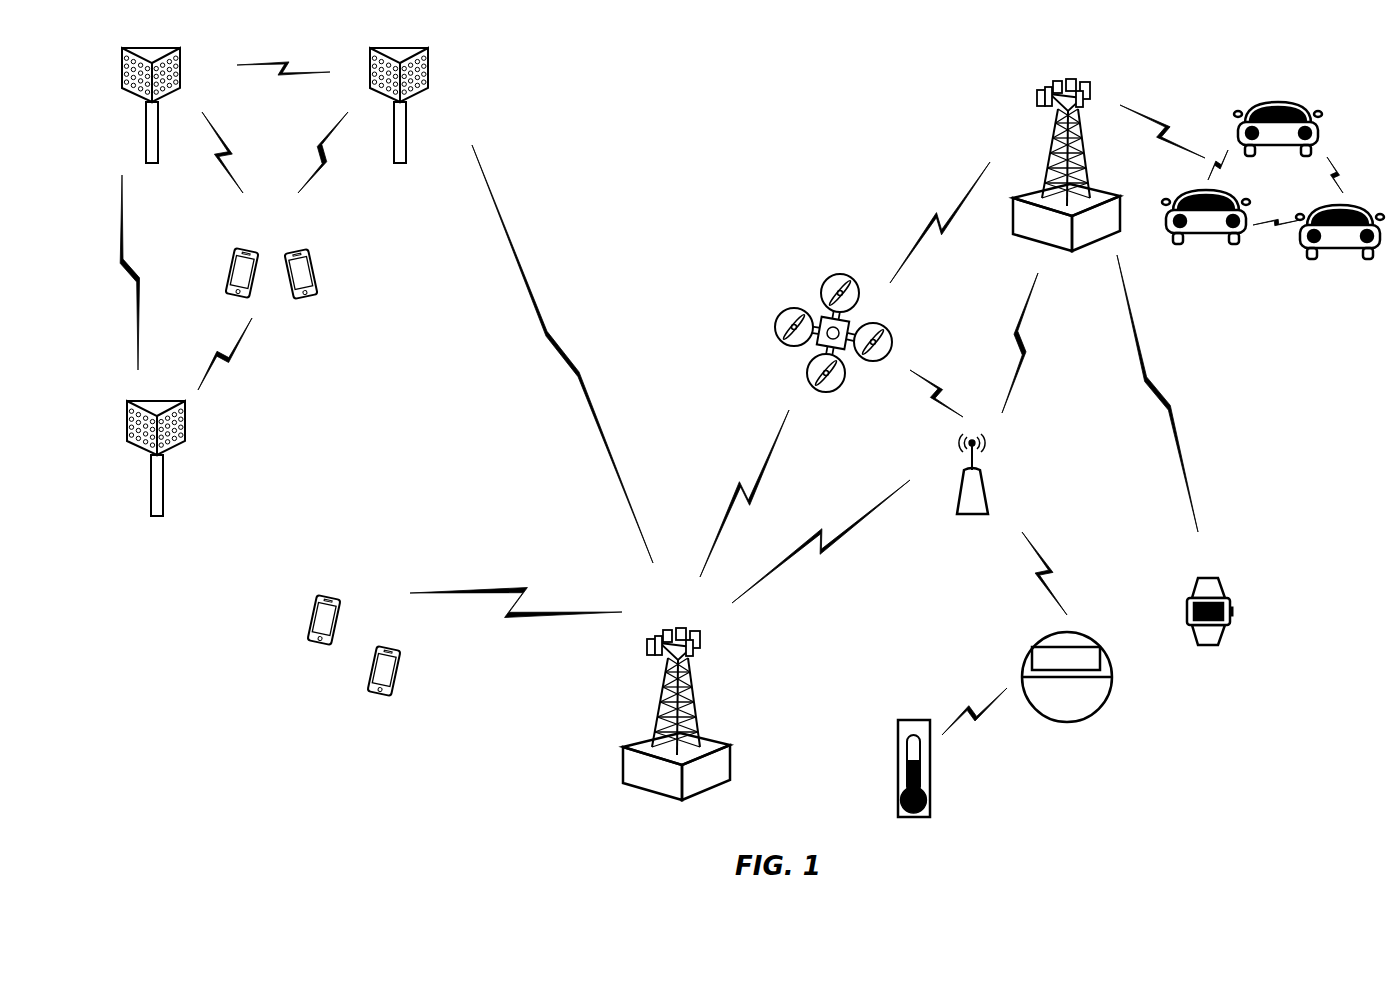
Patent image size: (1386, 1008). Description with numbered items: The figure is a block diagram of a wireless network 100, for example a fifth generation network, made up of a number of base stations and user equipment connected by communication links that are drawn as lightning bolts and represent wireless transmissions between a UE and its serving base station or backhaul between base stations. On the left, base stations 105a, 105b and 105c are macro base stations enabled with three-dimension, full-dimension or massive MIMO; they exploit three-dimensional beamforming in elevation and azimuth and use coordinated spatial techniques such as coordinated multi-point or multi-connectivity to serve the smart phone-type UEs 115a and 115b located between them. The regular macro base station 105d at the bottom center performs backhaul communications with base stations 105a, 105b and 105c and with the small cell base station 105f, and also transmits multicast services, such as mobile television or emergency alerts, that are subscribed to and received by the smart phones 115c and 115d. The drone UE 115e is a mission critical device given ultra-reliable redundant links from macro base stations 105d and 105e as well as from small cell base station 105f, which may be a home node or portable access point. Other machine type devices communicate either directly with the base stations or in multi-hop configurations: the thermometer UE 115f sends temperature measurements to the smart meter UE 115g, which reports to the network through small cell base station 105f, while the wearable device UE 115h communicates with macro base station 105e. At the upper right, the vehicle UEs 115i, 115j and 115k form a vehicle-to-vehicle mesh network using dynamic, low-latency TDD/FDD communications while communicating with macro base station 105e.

The wireless network 100 is at (828, 78).
The base station 105a is at (146, 141).
The base station 105b is at (406, 143).
The base station 105c is at (148, 505).
The macro base station 105d is at (636, 790).
The macro base station 105e is at (1028, 238).
The small cell base station 105f is at (958, 508).
The UE 115a is at (230, 262).
The UE 115b is at (314, 268).
The UE 115c is at (310, 604).
The UE 115d is at (398, 660).
The UE (drone) 115e is at (774, 329).
The UE (thermometer) 115f is at (930, 806).
The UE (smart meter) 115g is at (1088, 713).
The UE (wearable device) 115h is at (1223, 642).
The UE 115i is at (1298, 103).
The UE 115j is at (1370, 256).
The UE 115k is at (1178, 241).